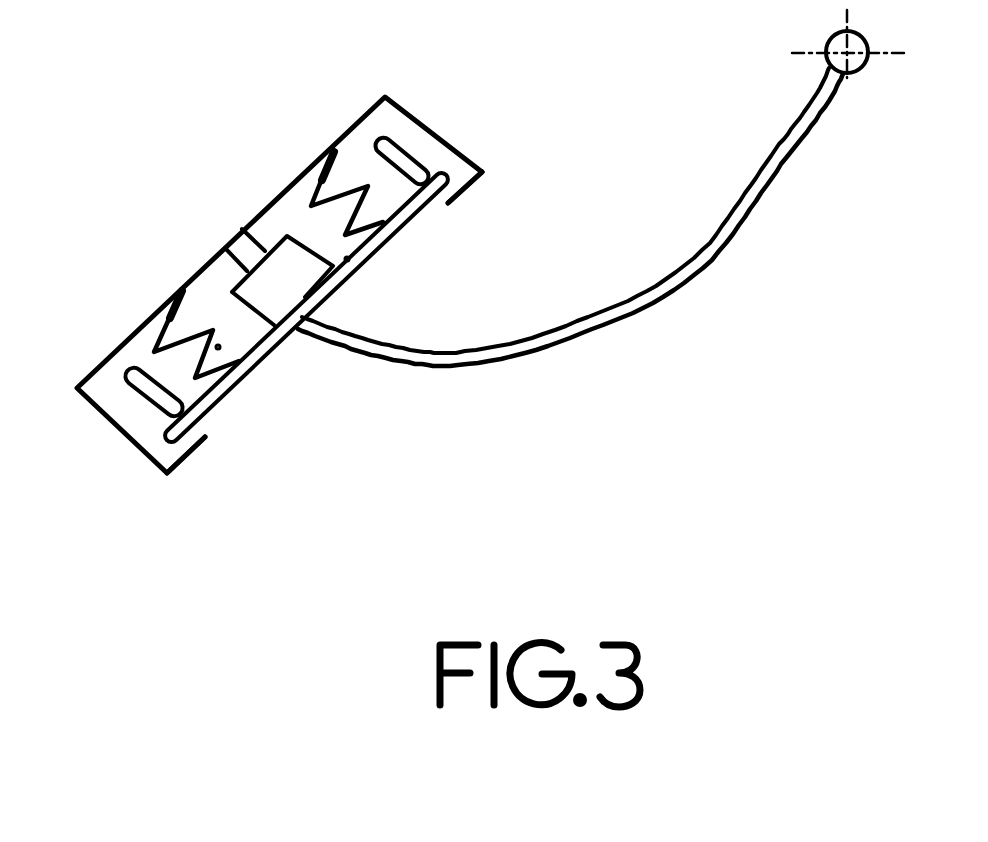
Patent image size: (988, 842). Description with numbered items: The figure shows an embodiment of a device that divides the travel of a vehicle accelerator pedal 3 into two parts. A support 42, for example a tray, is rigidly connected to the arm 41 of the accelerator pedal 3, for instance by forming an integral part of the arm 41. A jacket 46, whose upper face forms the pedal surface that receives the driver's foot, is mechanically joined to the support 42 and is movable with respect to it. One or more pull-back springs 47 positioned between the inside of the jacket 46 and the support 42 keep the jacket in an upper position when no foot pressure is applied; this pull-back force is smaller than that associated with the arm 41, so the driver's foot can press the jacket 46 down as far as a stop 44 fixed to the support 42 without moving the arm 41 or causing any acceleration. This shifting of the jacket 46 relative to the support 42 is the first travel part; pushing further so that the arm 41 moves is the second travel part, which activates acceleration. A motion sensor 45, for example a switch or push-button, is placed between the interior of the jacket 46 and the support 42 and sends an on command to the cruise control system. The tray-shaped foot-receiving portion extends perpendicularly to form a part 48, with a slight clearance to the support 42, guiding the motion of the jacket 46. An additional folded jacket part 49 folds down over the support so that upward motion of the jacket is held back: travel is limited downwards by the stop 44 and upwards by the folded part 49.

The accelerator pedal 3 is at (386, 97).
The arm 41 is at (598, 326).
The support 42 is at (388, 228).
The stop 44 is at (423, 153).
The motion sensor 45 is at (281, 270).
The jacket 46 is at (197, 267).
The pull-back spring 47 is at (348, 260).
The extended part 48 is at (440, 128).
The folded jacket part 49 is at (467, 190).